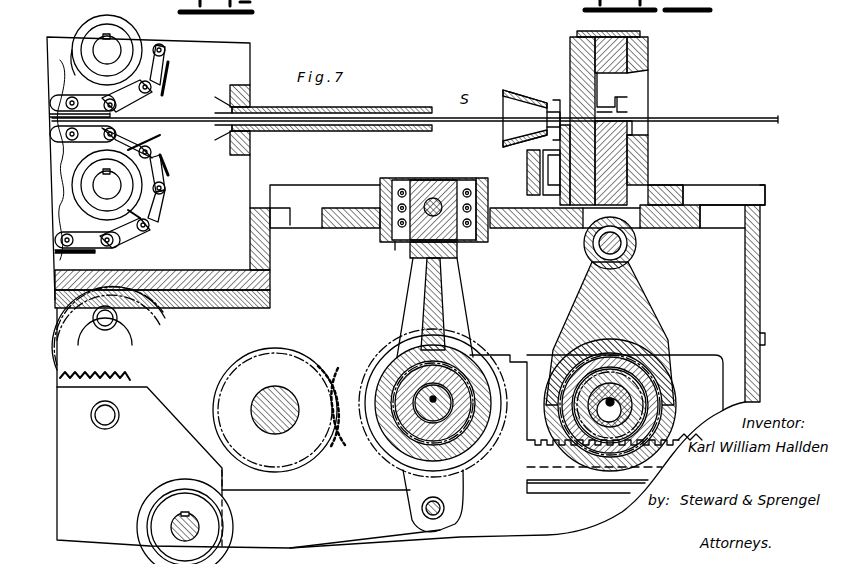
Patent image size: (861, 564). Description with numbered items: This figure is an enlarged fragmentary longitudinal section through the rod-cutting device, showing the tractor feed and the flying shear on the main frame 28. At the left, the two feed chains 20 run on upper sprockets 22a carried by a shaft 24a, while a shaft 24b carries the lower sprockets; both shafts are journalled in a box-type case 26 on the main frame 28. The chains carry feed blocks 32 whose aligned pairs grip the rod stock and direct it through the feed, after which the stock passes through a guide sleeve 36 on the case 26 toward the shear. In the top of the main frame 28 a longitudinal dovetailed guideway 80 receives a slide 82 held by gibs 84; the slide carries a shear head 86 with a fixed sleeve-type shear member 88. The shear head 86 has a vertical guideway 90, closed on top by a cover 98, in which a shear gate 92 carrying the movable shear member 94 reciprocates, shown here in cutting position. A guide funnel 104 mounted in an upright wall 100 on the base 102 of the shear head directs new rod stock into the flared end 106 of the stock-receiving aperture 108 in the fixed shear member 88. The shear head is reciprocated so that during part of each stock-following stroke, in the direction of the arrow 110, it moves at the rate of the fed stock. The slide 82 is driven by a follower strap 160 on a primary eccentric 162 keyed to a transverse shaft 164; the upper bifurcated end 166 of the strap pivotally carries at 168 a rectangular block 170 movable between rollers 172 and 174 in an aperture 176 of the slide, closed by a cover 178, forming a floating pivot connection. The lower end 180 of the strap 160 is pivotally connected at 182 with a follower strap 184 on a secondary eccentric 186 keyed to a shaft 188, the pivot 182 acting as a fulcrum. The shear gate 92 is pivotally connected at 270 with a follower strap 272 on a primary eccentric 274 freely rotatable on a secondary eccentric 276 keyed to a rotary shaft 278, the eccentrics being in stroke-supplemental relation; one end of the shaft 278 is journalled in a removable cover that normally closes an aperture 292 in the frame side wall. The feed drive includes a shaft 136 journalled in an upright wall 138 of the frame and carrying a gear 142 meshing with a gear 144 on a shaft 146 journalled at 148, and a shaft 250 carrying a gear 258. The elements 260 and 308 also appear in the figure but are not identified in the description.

The chains 20 is at (170, 48).
The upper pair of sprockets 22a is at (78, 45).
The upper sprocket-carrying shaft 24a is at (110, 48).
The lower sprocket-carrying shaft 24b is at (118, 190).
The box-type case 26 is at (258, 50).
The main frame 28 is at (765, 242).
The feed blocks 32 is at (166, 98).
The guide sleeve 36 is at (408, 108).
The longitudinal dovetailed guideway 80 is at (706, 222).
The slide 82 is at (515, 229).
The gibs 84 is at (710, 184).
The shear head 86 is at (565, 65).
The fixed sleeve-type shear member 88 is at (590, 82).
The vertical guideway 90 is at (580, 40).
The shear gate 92 is at (620, 165).
The movable shear member 94 is at (634, 128).
The cover 98 is at (640, 32).
The upright wall 100 is at (518, 93).
The base 102 is at (527, 185).
The guide funnel 104 is at (545, 143).
The flared end 106 is at (546, 120).
The stock-receiving aperture 108 is at (555, 162).
The arrow 110 is at (713, 90).
The shaft 136 is at (110, 420).
The upright wall 138 is at (155, 404).
The gear 142 is at (170, 355).
The gear 144 is at (155, 332).
The shaft 146 is at (104, 325).
The journal 148 is at (112, 325).
The follower strap 160 is at (470, 330).
The primary eccentric 162 is at (440, 400).
The transverse shaft 164 is at (460, 395).
The upper bifurcated end 166 is at (418, 248).
The pivot 168 is at (433, 180).
The rectangular block 170 is at (428, 200).
The rotary rollers 172 is at (400, 190).
The rotary rollers 174 is at (478, 180).
The aperture 176 is at (398, 240).
The cover 178 is at (465, 188).
The lower end 180 is at (455, 488).
The pivot connection 182 is at (442, 512).
The follower strap 184 is at (333, 488).
The secondary eccentric 186 is at (170, 498).
The shaft 188 is at (200, 525).
The shaft 250 is at (283, 398).
The gear 258 is at (288, 355).
The gear 260 is at (368, 355).
The pivot connection 270 is at (620, 245).
The follower strap 272 is at (640, 318).
The primary eccentric 274 is at (660, 360).
The secondary eccentric 276 is at (640, 395).
The rotary shaft 278 is at (620, 410).
The aperture 292 is at (533, 355).
The rack 308 is at (690, 440).